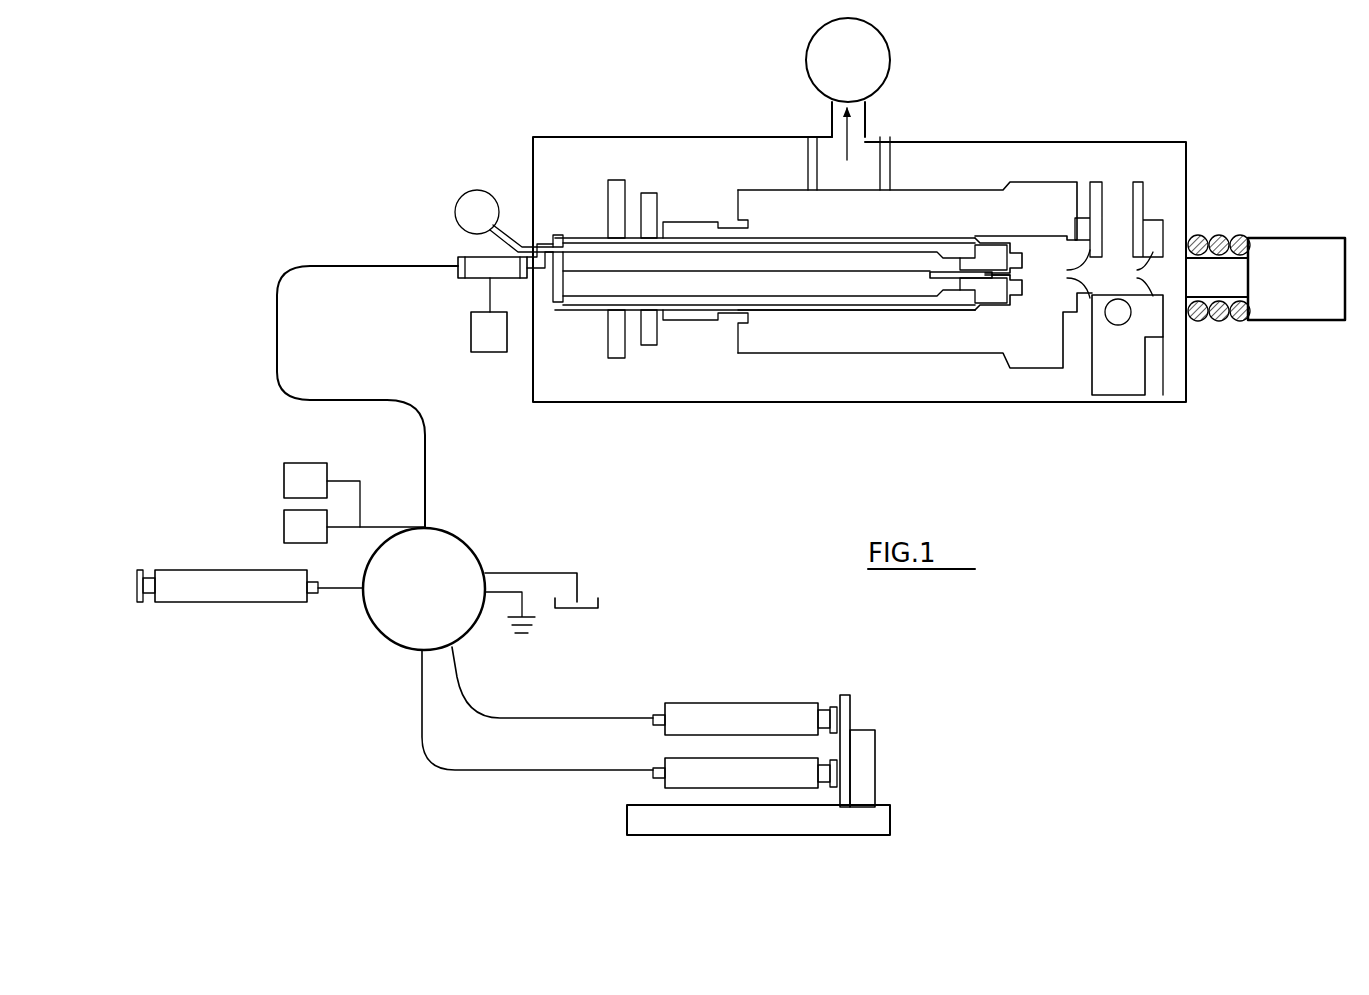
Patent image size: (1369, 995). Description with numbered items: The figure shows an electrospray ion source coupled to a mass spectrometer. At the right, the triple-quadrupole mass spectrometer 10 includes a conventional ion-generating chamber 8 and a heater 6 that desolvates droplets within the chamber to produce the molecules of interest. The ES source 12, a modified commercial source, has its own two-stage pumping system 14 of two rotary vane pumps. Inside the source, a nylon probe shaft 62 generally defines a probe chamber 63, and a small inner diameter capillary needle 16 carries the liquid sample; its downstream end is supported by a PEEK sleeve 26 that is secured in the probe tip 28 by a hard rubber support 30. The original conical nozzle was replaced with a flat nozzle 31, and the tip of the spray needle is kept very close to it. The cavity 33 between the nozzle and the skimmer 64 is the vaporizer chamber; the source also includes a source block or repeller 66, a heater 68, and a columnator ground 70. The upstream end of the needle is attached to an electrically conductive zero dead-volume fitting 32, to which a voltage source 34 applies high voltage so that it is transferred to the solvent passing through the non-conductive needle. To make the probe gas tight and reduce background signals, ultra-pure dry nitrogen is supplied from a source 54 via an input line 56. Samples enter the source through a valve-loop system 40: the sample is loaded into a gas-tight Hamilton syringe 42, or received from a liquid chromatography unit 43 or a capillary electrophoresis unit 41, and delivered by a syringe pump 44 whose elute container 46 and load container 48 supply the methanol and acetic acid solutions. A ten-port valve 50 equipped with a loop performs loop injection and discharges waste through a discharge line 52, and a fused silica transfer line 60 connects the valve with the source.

The heater 6 is at (1218, 235).
The ion-generating chamber 8 is at (1237, 275).
The triple-quadrupole mass spectrometer 10 is at (1308, 303).
The ES source 12 is at (677, 162).
The two-stage pumping system 14 is at (830, 53).
The capillary needle 16 is at (983, 237).
The PEEK sleeve 26 is at (940, 279).
The probe tip 28 is at (948, 250).
The hard rubber support 30 is at (967, 292).
The flat nozzle 31 is at (1007, 275).
The zero dead-volume fitting 32 is at (470, 255).
The cavity 33 is at (1060, 297).
The voltage source 34 is at (482, 328).
The valve-loop system 40 is at (270, 413).
The capillary electrophoresis unit 41 is at (300, 480).
The gas-tight Hamilton syringe 42 is at (242, 592).
The liquid chromatography unit 43 is at (300, 528).
The syringe pump 44 is at (855, 827).
The elute container 46 is at (783, 718).
The load container 48 is at (787, 775).
The 10-port valve 50 is at (377, 633).
The discharge line 52 is at (535, 572).
The nitrogen source 54 is at (460, 203).
The input line 56 is at (510, 228).
The fused silica transfer line 60 is at (278, 313).
The nylon probe shaft 62 is at (763, 310).
The probe chamber 63 is at (857, 287).
The skimmer 64 is at (1077, 265).
The source block 66 is at (1128, 393).
The heater 68 is at (1120, 326).
The columnator ground 70 is at (1160, 297).